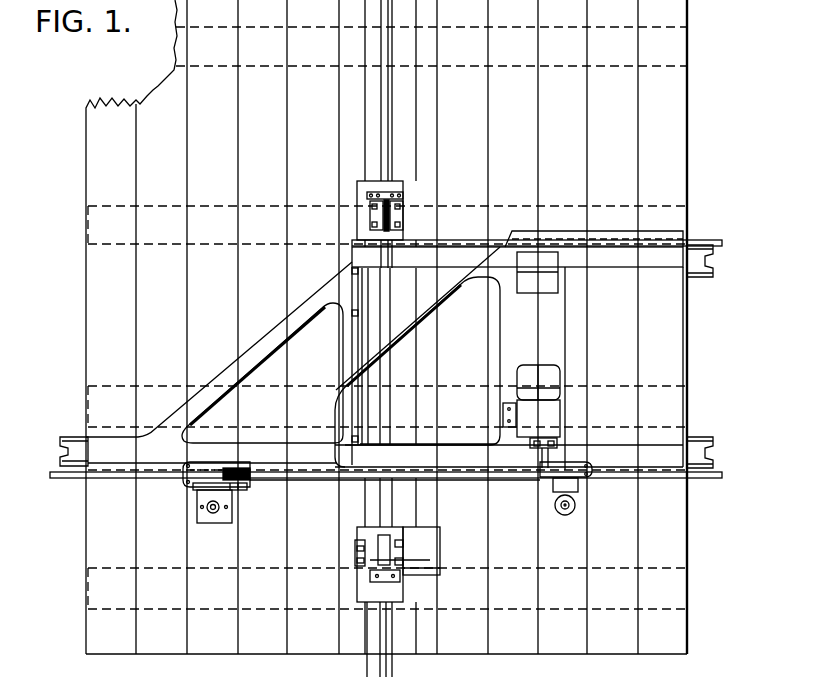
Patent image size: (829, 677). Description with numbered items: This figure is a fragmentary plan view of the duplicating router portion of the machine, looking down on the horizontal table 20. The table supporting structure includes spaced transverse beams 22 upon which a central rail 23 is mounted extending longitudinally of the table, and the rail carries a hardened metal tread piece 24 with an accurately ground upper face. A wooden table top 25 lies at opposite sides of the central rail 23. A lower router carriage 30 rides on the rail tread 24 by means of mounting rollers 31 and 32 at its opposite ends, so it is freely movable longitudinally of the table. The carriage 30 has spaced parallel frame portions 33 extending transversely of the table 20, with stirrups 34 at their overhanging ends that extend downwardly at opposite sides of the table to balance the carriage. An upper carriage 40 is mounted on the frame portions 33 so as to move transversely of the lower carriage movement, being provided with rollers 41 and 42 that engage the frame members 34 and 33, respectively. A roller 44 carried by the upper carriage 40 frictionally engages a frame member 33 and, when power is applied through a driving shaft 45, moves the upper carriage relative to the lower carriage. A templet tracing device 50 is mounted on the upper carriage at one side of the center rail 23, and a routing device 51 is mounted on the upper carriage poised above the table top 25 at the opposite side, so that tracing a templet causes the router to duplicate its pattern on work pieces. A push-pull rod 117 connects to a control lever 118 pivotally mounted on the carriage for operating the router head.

The horizontal table 20 is at (78, 334).
The transverse beams 22 is at (86, 226).
The central rail 23 is at (376, 654).
The tread piece 24 is at (390, 654).
The wooden table top 25 is at (387, 327).
The lower router carriage 30 is at (246, 352).
The mounting roller 31 is at (392, 551).
The mounting roller 32 is at (370, 212).
The frame portions 33 is at (716, 241).
The stirrups 34 is at (60, 455).
The upper carriage 40 is at (509, 358).
The rollers 41 is at (546, 240).
The rollers 42 is at (250, 459).
The roller 44 is at (530, 471).
The driving shaft 45 is at (565, 459).
The templet tracing device 50 is at (213, 523).
The routing device 51 is at (570, 516).
The push-pull rod 117 is at (316, 481).
The control lever 118 is at (245, 489).